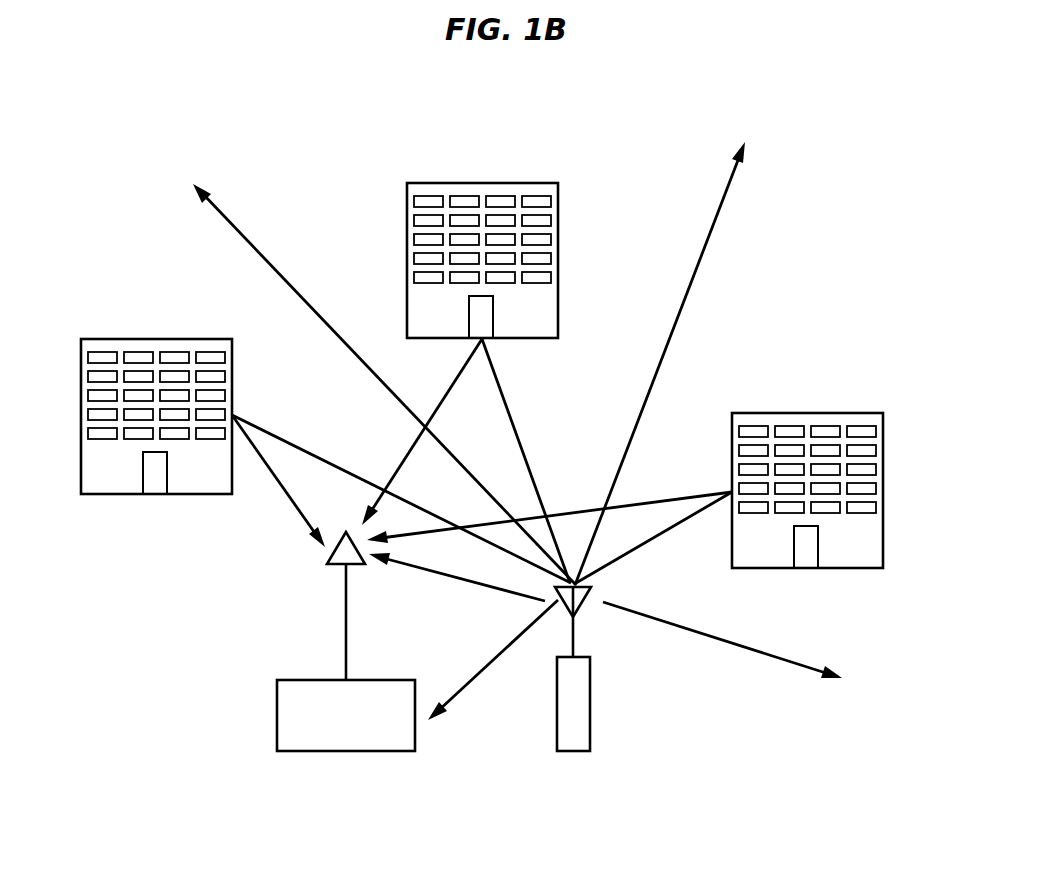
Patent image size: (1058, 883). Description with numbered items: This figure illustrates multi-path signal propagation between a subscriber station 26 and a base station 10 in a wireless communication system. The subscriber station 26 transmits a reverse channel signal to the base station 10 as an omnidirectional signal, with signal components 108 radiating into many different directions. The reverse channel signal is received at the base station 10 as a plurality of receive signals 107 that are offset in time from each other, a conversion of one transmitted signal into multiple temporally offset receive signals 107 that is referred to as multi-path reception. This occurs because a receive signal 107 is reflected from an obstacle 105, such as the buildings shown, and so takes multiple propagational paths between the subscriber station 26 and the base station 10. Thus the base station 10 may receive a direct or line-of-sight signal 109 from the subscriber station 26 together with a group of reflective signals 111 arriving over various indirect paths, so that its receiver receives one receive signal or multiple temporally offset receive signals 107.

The base station 10 is at (277, 722).
The subscriber station 26 is at (592, 705).
The obstacle 105 is at (157, 339).
The receive signals 107 is at (482, 483).
The signal components 108 is at (262, 250).
The direct or line-of-sight signal 109 is at (457, 580).
The reflective signals 111 is at (305, 522).